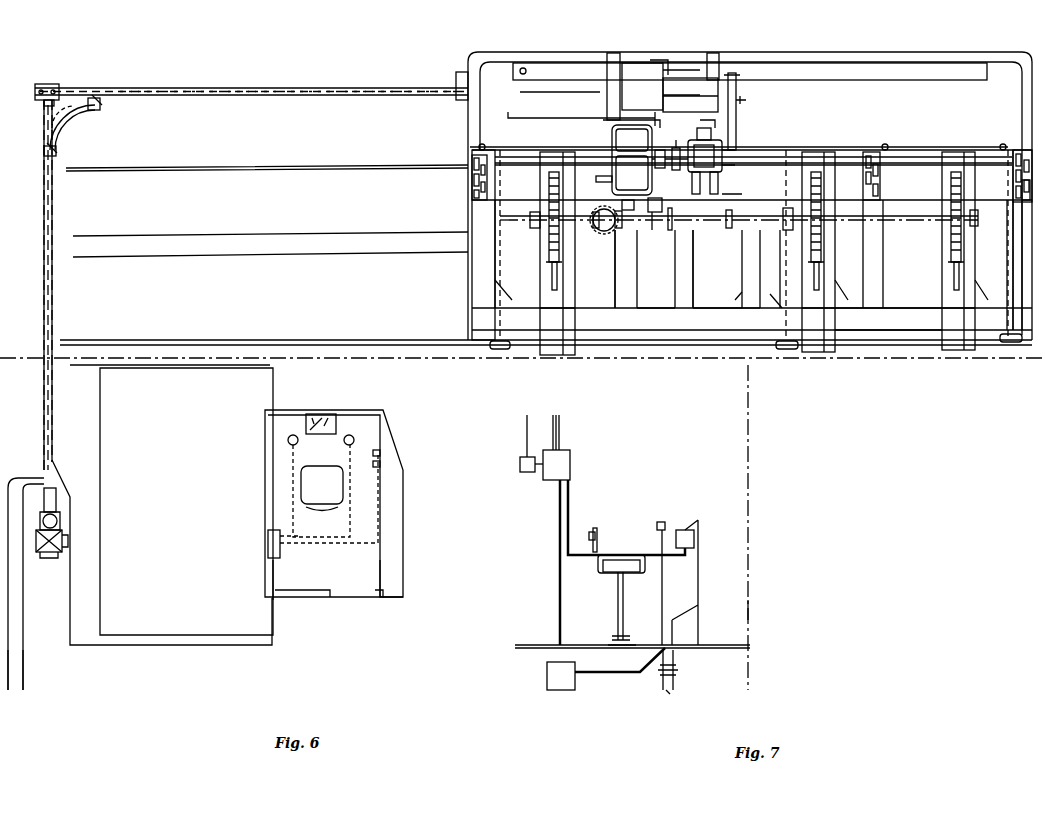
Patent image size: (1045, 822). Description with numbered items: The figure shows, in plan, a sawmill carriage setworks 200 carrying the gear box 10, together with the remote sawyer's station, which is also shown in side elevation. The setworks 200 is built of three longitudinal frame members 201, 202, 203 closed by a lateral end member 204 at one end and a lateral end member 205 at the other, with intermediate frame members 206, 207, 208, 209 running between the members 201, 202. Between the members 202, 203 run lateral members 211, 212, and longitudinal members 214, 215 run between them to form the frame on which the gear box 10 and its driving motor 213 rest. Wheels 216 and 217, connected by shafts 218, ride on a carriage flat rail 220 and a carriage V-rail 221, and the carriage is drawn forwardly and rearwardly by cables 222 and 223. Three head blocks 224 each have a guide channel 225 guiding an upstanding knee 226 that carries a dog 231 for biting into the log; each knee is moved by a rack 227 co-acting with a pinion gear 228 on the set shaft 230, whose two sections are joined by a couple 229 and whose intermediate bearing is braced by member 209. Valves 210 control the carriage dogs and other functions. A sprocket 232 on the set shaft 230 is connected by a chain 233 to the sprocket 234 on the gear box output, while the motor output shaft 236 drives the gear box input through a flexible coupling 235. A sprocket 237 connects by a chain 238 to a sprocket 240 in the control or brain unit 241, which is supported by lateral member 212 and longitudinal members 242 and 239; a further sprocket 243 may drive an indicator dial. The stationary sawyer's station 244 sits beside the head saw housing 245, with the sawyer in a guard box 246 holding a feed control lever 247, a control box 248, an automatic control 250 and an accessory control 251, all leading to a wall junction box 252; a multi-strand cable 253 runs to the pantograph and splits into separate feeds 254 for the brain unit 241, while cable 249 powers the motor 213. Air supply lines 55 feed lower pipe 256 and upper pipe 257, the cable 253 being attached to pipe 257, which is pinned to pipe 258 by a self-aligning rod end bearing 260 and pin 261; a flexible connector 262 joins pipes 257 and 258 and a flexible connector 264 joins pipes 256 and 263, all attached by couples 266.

In FIG. 6, the gear box 10 is at (632, 160).
In FIG. 6, the hose lines 55 is at (8, 490).
In FIG. 6, the sawmill carriage setworks 200 is at (464, 271).
In FIG. 6, the longitudinal frame member 201 is at (920, 330).
In FIG. 6, the longitudinal frame member 202 is at (1014, 190).
In FIG. 6, the longitudinal frame member 203 is at (935, 55).
In FIG. 6, the lateral end member 204 is at (494, 239).
In FIG. 6, the lateral end member 205 is at (1026, 265).
In FIG. 6, the intermediate frame member 206 is at (880, 272).
In FIG. 6, the intermediate frame member 207 is at (748, 273).
In FIG. 6, the intermediate frame member 208 is at (720, 297).
In FIG. 6, the intermediate frame member 209 is at (630, 267).
In FIG. 6, the valves 210 is at (474, 192).
In FIG. 6, the lateral member 211 is at (614, 53).
In FIG. 6, the lateral member 212 is at (712, 53).
In FIG. 6, the driving motor 213 is at (711, 157).
In FIG. 6, the longitudinal member 214 is at (676, 144).
In FIG. 6, the longitudinal member 215 is at (668, 200).
In FIG. 6, the wheels 216 is at (500, 350).
In FIG. 6, the wheels 217 is at (495, 147).
In FIG. 6, the shafts 218 is at (500, 274).
In FIG. 6, the carriage flat rail 220 is at (210, 342).
In FIG. 6, the carriage V-rail 221 is at (226, 167).
In FIG. 6, the cable 222 is at (212, 235).
In FIG. 6, the cable 223 is at (240, 255).
In FIG. 6, the head blocks 224 is at (568, 302).
In FIG. 6, the guide channel 225 is at (560, 326).
In FIG. 6, the upstanding knee 226 is at (560, 268).
In FIG. 6, the rack 227 is at (548, 243).
In FIG. 6, the pinion gear 228 is at (540, 208).
In FIG. 6, the couple 229 is at (778, 212).
In FIG. 6, the set shaft 230 is at (548, 222).
In FIG. 6, the dog 231 is at (552, 288).
In FIG. 6, the sprocket 232 is at (598, 234).
In FIG. 6, the chain 233 is at (620, 206).
In FIG. 6, the sprocket 234 is at (606, 182).
In FIG. 6, the flexible coupling 235 is at (632, 159).
In FIG. 6, the output shaft 236 is at (664, 170).
In FIG. 6, the sprocket 237 is at (724, 269).
In FIG. 6, the chain 238 is at (722, 180).
In FIG. 6, the longitudinal member 239 is at (642, 87).
In FIG. 6, the sprocket 240 is at (716, 90).
In FIG. 6, the control or brain unit 241 is at (690, 100).
In FIG. 6, the longitudinal member 242 is at (660, 72).
In FIG. 6, the sprocket 243 is at (642, 269).
In FIG. 6, the sawyer's station 244 is at (404, 447).
In FIG. 7, the sawyer's station 244 is at (756, 608).
In FIG. 6, the head saw housing 245 is at (93, 420).
In FIG. 6, the guard box 246 is at (398, 562).
In FIG. 7, the guard box 246 is at (524, 645).
In FIG. 6, the feed control lever 247 is at (288, 440).
In FIG. 6, the control box 248 is at (347, 446).
In FIG. 7, the control box 248 is at (664, 522).
In FIG. 6, the cable 249 is at (514, 116).
In FIG. 6, the automatic control 250 is at (322, 412).
In FIG. 7, the automatic control 250 is at (694, 536).
In FIG. 6, the accessory control 251 is at (380, 462).
In FIG. 6, the wall junction box 252 is at (268, 540).
In FIG. 7, the wall junction box 252 is at (602, 530).
In FIG. 6, the multi-strand cable 253 is at (272, 577).
In FIG. 7, the multi-strand cable 253 is at (559, 438).
In FIG. 6, the separate feeds 254 is at (665, 62).
In FIG. 6, the lower pipe 256 is at (22, 638).
In FIG. 6, the upper pipe 257 is at (44, 306).
In FIG. 6, the upper pipe 258 is at (118, 93).
In FIG. 6, the self-aligning rod end bearing 260 is at (52, 87).
In FIG. 6, the pin 261 is at (38, 87).
In FIG. 6, the flexible connector 262 is at (60, 114).
In FIG. 6, the lower pipe 263 is at (186, 91).
In FIG. 6, the flexible connector 264 is at (74, 124).
In FIG. 6, the couples 266 is at (92, 104).